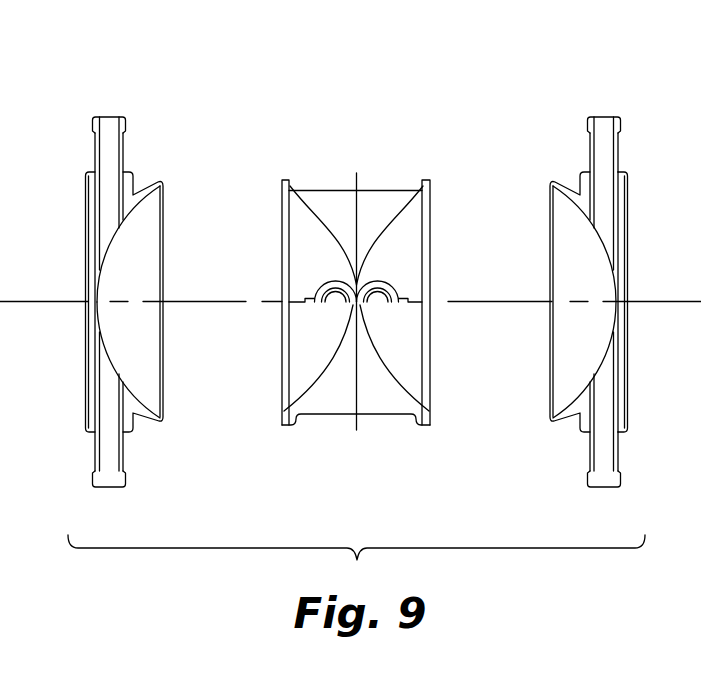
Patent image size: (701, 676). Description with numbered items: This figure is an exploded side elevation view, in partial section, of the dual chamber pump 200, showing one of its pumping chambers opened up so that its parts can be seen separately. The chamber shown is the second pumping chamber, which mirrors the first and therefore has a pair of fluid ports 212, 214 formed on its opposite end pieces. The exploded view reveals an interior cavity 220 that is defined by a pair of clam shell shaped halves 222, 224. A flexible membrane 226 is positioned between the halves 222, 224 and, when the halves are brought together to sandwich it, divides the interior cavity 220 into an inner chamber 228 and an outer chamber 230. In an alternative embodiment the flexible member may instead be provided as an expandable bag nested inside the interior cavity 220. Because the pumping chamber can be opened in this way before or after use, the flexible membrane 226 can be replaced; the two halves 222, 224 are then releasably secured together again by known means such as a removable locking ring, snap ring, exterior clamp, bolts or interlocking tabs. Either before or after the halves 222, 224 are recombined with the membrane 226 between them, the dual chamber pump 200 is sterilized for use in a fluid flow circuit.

The dual chamber pump 200 is at (459, 93).
The fluid port 212 is at (604, 488).
The fluid port 214 is at (603, 115).
The interior cavity 220 is at (290, 343).
The clam shell shaped half 222 is at (120, 253).
The clam shell shaped half 224 is at (310, 228).
The flexible membrane 226 is at (167, 223).
The inner chamber 228 is at (120, 333).
The outer chamber 230 is at (293, 323).